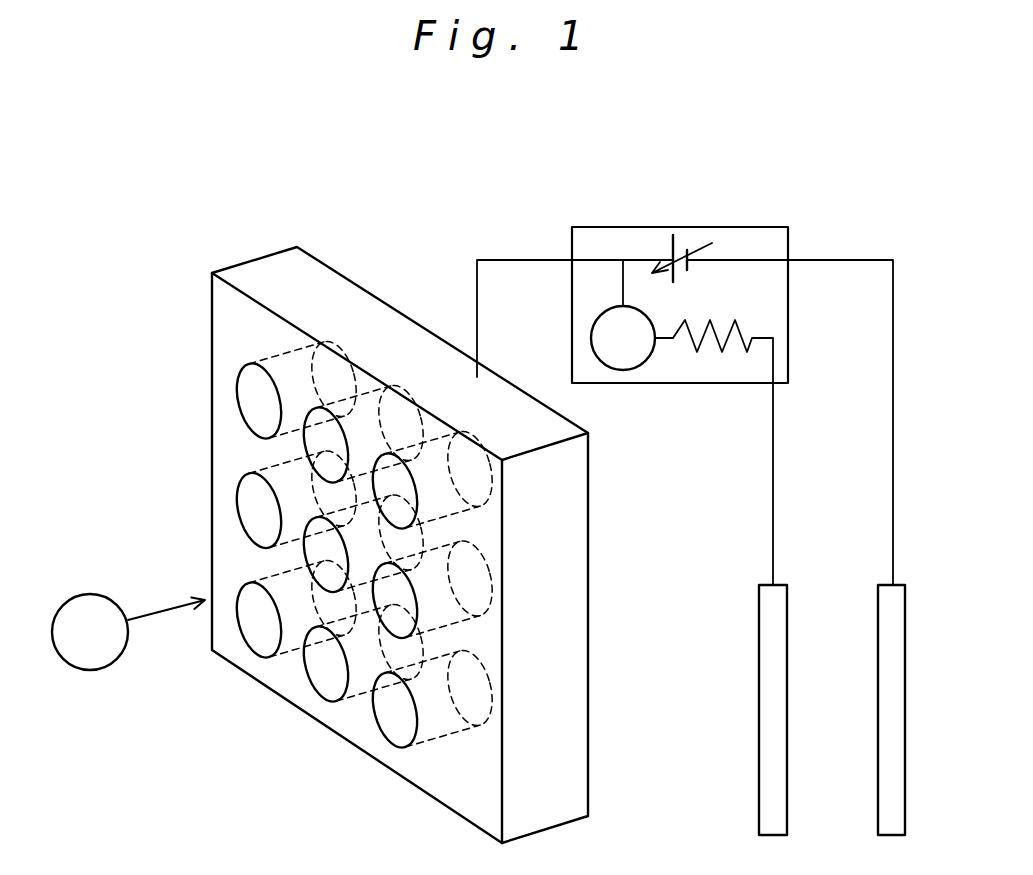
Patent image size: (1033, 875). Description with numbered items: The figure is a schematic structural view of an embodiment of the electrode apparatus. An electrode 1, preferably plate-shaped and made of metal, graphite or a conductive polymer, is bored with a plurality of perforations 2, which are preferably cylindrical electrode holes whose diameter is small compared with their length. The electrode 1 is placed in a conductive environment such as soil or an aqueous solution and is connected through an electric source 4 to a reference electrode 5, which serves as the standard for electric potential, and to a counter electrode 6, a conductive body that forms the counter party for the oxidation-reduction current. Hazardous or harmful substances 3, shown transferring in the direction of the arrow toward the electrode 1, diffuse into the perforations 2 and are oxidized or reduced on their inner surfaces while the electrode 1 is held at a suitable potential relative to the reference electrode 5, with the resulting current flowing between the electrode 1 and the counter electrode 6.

The electrode 1 is at (228, 341).
The perforations 2 is at (248, 510).
The hazardous or harmful substances 3 is at (93, 662).
The electric source 4 is at (695, 372).
The reference electrode 5 is at (765, 625).
The counter electrode 6 is at (890, 652).